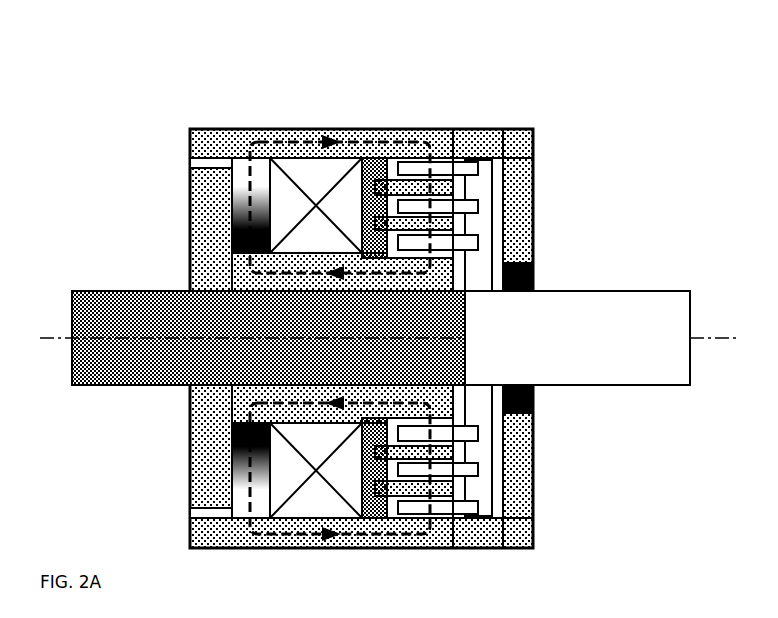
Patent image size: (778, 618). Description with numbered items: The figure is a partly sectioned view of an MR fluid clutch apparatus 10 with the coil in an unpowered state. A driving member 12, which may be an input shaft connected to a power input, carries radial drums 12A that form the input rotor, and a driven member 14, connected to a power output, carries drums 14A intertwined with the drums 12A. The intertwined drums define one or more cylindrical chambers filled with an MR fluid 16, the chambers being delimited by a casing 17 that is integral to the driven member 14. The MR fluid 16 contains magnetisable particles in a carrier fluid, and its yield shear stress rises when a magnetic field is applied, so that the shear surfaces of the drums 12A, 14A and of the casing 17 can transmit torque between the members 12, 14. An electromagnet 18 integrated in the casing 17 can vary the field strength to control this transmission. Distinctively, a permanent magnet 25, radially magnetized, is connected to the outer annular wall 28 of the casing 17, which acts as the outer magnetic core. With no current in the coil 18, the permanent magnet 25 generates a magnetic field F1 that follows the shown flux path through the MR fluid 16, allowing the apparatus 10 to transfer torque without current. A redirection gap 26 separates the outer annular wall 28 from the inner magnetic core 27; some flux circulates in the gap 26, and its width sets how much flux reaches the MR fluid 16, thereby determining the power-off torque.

The MR fluid clutch apparatus 10 is at (693, 188).
The driving member 12 is at (553, 293).
The rotor fins 12A is at (492, 252).
The driven member 14 is at (107, 300).
The shaft pole fins 14A is at (372, 160).
The MR fluid 16 is at (465, 222).
The casing 17 is at (492, 128).
The electromagnet 18 is at (297, 167).
The permanent magnet 25 is at (240, 215).
The redirection gap 26 is at (187, 167).
The inner magnetic core 27 is at (205, 263).
The outer annular wall 28 is at (427, 128).
The magnetic field F1 is at (370, 143).